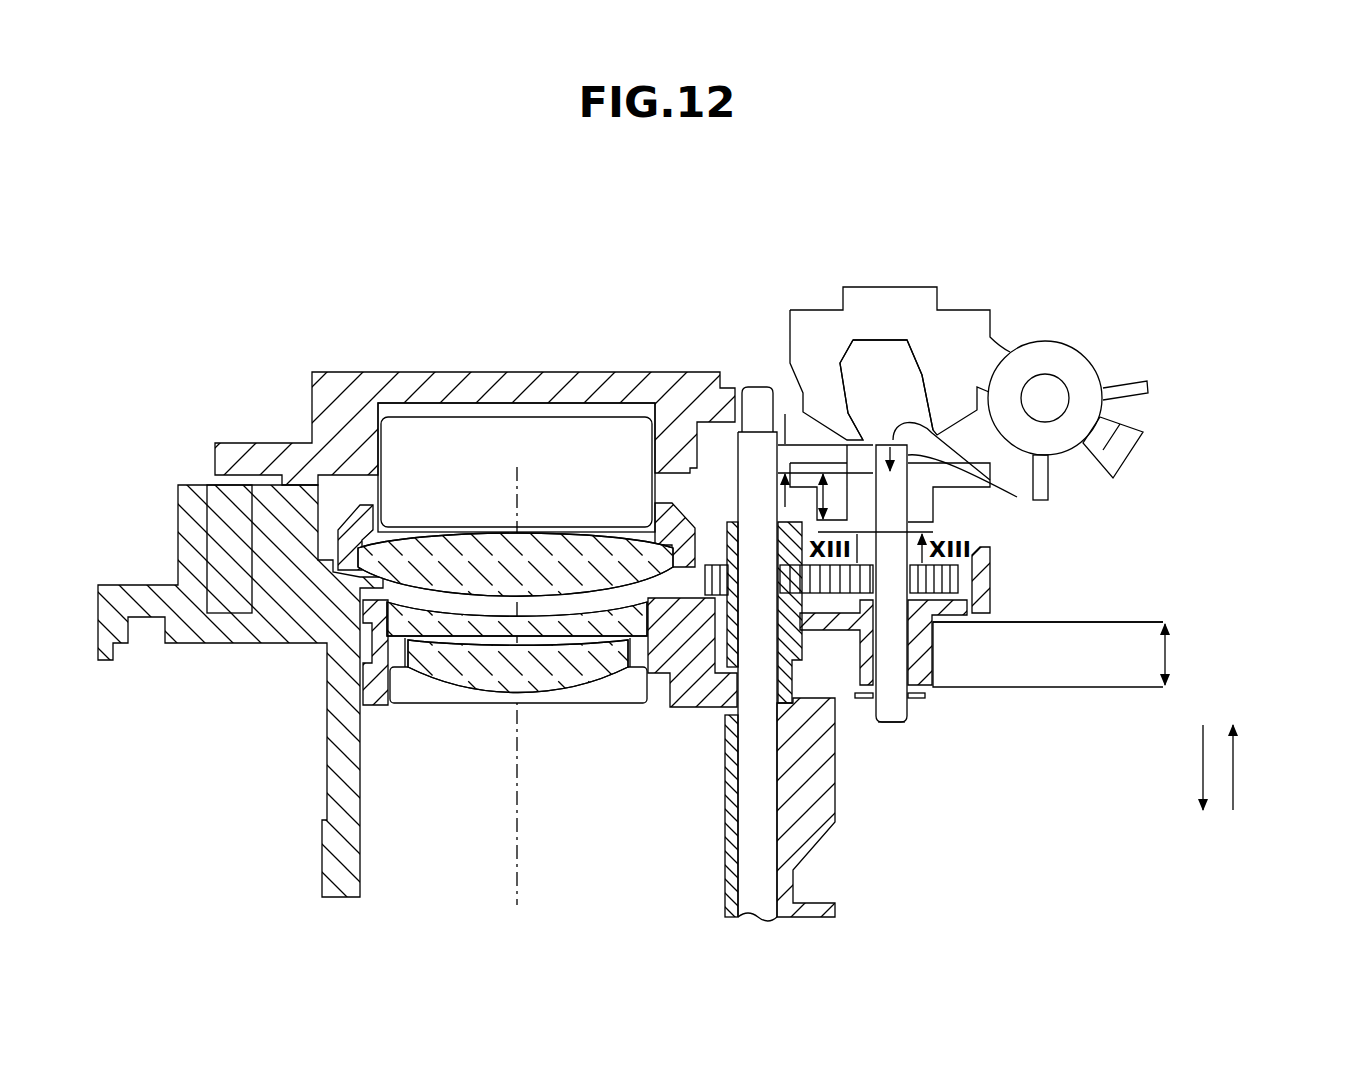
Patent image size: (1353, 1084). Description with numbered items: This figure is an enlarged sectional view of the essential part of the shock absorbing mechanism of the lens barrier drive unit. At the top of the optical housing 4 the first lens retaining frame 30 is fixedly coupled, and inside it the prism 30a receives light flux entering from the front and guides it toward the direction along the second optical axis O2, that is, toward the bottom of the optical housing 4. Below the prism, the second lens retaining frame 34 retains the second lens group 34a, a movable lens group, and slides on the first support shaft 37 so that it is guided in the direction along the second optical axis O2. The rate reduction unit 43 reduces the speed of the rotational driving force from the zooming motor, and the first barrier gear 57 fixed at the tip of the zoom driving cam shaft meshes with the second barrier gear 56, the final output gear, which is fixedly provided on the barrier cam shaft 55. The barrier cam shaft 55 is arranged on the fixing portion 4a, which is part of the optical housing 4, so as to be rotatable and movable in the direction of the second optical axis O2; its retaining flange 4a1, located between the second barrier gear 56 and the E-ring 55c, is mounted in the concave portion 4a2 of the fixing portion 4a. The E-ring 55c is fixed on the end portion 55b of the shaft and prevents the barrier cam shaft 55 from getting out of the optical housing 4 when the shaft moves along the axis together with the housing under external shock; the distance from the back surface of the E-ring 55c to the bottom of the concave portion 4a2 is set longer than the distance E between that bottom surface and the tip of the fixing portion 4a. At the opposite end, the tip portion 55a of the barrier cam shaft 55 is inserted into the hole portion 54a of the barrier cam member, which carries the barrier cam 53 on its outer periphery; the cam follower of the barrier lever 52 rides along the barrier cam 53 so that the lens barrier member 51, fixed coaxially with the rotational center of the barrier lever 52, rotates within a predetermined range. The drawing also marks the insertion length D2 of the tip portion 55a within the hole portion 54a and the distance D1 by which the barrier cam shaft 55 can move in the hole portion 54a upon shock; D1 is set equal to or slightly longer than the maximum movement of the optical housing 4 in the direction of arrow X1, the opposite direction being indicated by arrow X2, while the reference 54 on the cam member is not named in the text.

The optical housing 4 is at (240, 330).
The first lens retaining frame 30 is at (598, 385).
The prism 30a is at (483, 443).
The second lens retaining frame 34 is at (657, 688).
The second lens group 34a is at (460, 657).
The first support shaft 37 is at (748, 877).
The rate reduction unit 43 is at (818, 787).
The fixing portion 4a is at (925, 667).
The retaining flange 4a1 is at (915, 612).
The concave portion 4a2 is at (857, 612).
The lens barrier member 51 is at (1143, 437).
The barrier lever 52 is at (1055, 355).
The barrier cam 53 is at (957, 335).
The drive member 54 is at (880, 355).
The hole portion 54a is at (1017, 497).
The barrier cam shaft 55 is at (893, 708).
The tip portion 55a is at (903, 463).
The end portion 55b is at (897, 727).
The E-ring 55c is at (864, 700).
The second barrier gear 56 is at (940, 582).
The first barrier gear 57 is at (840, 577).
The second optical axis O2 is at (517, 866).
The distance D1 is at (783, 457).
The insertion length D2 is at (820, 497).
The distance E is at (1178, 654).
The direction of arrow X1 is at (1235, 782).
The direction X2 is at (1200, 757).